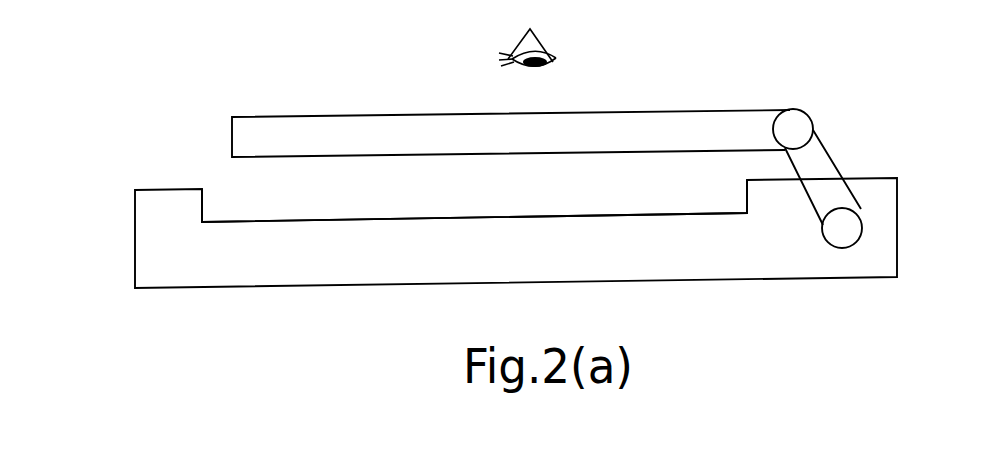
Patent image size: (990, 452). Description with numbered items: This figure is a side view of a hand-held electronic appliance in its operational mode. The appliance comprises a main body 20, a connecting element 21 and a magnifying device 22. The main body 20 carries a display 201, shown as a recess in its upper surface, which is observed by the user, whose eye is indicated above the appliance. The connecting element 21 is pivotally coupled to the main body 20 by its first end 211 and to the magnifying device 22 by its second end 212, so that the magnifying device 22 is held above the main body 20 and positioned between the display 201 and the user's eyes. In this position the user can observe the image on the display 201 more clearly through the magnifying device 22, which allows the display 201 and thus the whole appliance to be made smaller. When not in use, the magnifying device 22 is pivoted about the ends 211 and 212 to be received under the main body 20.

The main body 20 is at (883, 240).
The display 201 is at (230, 205).
The connecting element 21 is at (873, 158).
The first end 211 is at (843, 222).
The second end 212 is at (795, 127).
The magnifying device 22 is at (632, 127).